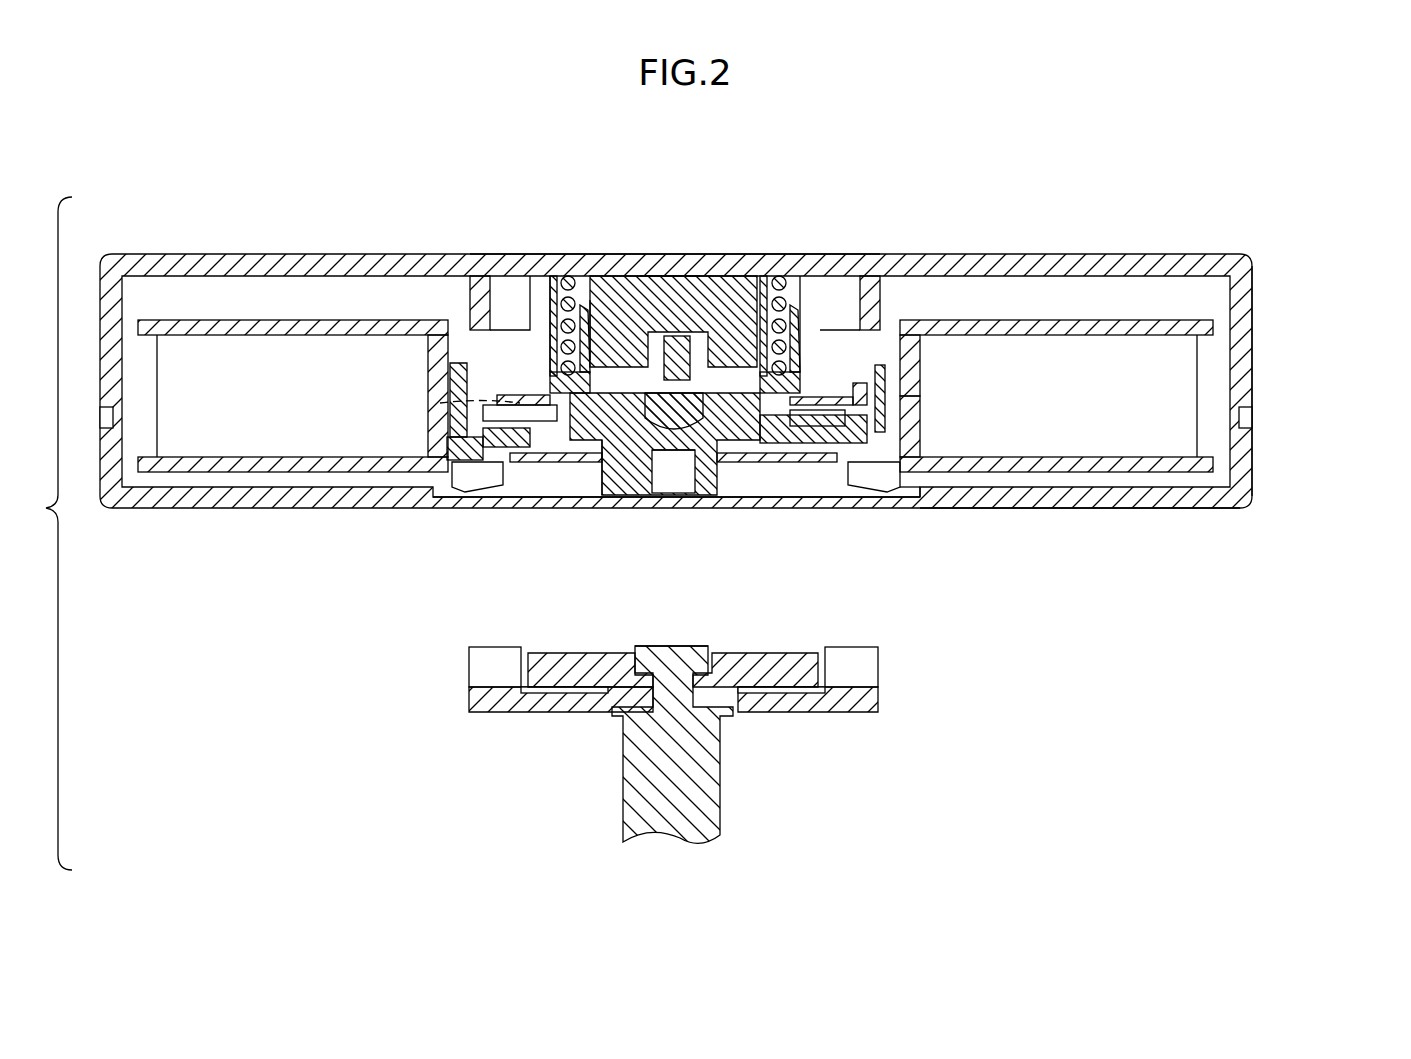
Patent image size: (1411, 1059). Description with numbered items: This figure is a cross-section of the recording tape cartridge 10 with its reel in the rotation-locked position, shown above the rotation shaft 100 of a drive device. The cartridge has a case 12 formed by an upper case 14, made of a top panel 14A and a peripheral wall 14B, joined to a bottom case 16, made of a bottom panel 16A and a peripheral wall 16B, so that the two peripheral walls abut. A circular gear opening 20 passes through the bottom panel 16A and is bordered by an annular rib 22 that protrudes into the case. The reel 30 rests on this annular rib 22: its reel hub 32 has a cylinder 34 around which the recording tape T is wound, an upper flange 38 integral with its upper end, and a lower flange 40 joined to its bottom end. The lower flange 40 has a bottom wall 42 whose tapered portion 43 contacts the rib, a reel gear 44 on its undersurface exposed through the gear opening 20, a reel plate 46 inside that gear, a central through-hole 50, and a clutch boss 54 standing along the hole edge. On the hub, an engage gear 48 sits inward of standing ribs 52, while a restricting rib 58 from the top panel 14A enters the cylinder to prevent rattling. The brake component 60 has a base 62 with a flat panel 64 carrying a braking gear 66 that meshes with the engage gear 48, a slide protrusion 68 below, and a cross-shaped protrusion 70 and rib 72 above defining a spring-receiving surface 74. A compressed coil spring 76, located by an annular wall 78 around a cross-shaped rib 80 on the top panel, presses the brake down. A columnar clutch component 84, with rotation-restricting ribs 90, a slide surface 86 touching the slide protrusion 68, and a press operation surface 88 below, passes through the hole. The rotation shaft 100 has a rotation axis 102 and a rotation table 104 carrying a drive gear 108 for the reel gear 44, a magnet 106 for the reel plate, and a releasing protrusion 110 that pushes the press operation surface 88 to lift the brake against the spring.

The recording tape cartridge 10 is at (936, 140).
The case 12 is at (1358, 365).
The upper case 14 is at (724, 281).
The top panel 14A is at (1070, 258).
The peripheral wall 14B is at (1253, 290).
The bottom case 16 is at (724, 466).
The bottom panel 16A is at (1110, 508).
The peripheral wall 16B is at (1253, 494).
The gear opening 20 is at (885, 505).
The annular rib 22 is at (920, 485).
The reel 30 is at (1056, 332).
The reel hub 32 is at (1056, 396).
The cylinder 34 is at (912, 388).
The upper flange 38 is at (1105, 330).
The lower flange 40 is at (1098, 465).
The bottom wall 42 is at (510, 440).
The tapered portion 43 is at (900, 500).
The reel gear 44 is at (458, 482).
The reel plate 46 is at (770, 455).
The engage gear 48 is at (480, 412).
The through-hole 50 is at (730, 480).
The standing ribs 52 is at (455, 380).
The clutch boss 54 is at (597, 440).
The restricting rib 58 is at (855, 335).
The brake component 60 is at (540, 360).
The base 62 is at (600, 360).
The flat panel 64 is at (525, 392).
The braking gear 66 is at (470, 405).
The slide protrusion 68 is at (695, 395).
The cross-shaped protrusion 70 is at (780, 400).
The rib 72 is at (795, 372).
The spring-receiving surface 74 is at (797, 351).
The compressed coil spring 76 is at (832, 345).
The annular wall 78 is at (578, 300).
The cross-shaped rib 80 is at (665, 300).
The clutch component 84 is at (664, 371).
The slide surface 86 is at (637, 400).
The press operation surface 88 is at (695, 470).
The rotation-restricting ribs 90 is at (745, 400).
The rotation shaft 100 is at (690, 729).
The rotation axis 102 is at (697, 729).
The rotation table 104 is at (805, 705).
The magnet 106 is at (560, 700).
The drive gear 108 is at (480, 670).
The releasing protrusion 110 is at (672, 650).
The recording tape T is at (275, 365).